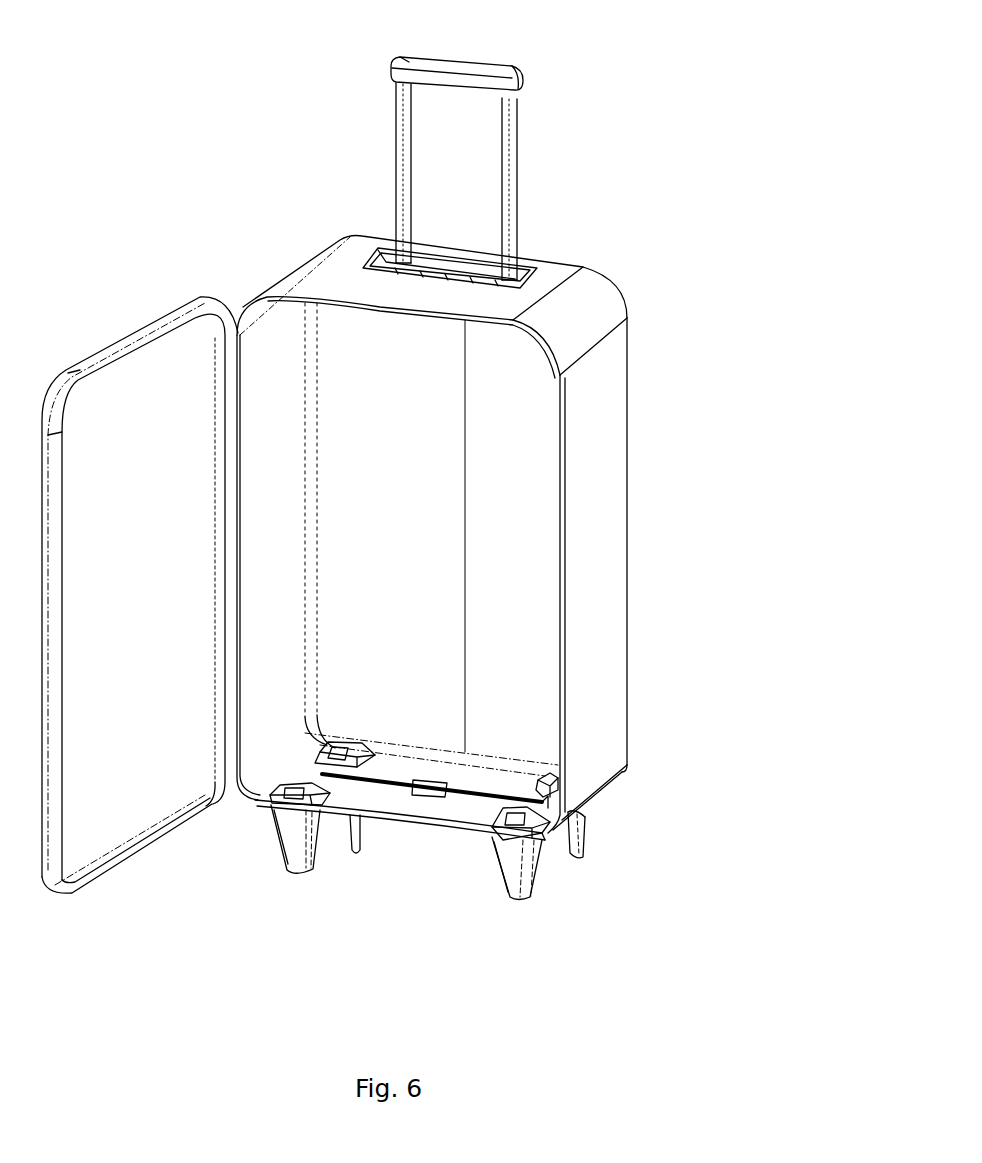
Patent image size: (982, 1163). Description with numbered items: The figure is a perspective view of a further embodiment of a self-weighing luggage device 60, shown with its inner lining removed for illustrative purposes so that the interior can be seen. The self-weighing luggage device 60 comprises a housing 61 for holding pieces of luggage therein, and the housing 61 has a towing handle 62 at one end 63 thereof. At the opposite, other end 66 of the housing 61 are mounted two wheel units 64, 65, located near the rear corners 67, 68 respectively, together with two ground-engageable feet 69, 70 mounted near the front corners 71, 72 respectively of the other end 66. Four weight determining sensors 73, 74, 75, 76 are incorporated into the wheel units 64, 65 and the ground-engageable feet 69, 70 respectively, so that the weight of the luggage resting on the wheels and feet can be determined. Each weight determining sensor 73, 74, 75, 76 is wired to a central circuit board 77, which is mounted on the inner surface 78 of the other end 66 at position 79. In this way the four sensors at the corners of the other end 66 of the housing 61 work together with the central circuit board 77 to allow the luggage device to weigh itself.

The self-weighing luggage device 60 is at (177, 170).
The housing 61 is at (605, 377).
The towing handle 62 is at (500, 80).
The one end 63 is at (548, 275).
The wheel unit 64 is at (363, 807).
The wheel unit 65 is at (583, 835).
The other end 66 is at (400, 810).
The rear corner 67 is at (327, 752).
The rear corner 68 is at (627, 765).
The ground-engageable foot 69 is at (293, 845).
The ground-engageable foot 70 is at (515, 873).
The front corner 71 is at (258, 797).
The front corner 72 is at (552, 835).
The weight determining sensor 73 is at (350, 747).
The weight determining sensor 74 is at (557, 760).
The weight determining sensor 75 is at (295, 787).
The weight determining sensor 76 is at (495, 840).
The central circuit board 77 is at (433, 790).
The inner surface 78 is at (370, 802).
The position 79 is at (447, 780).